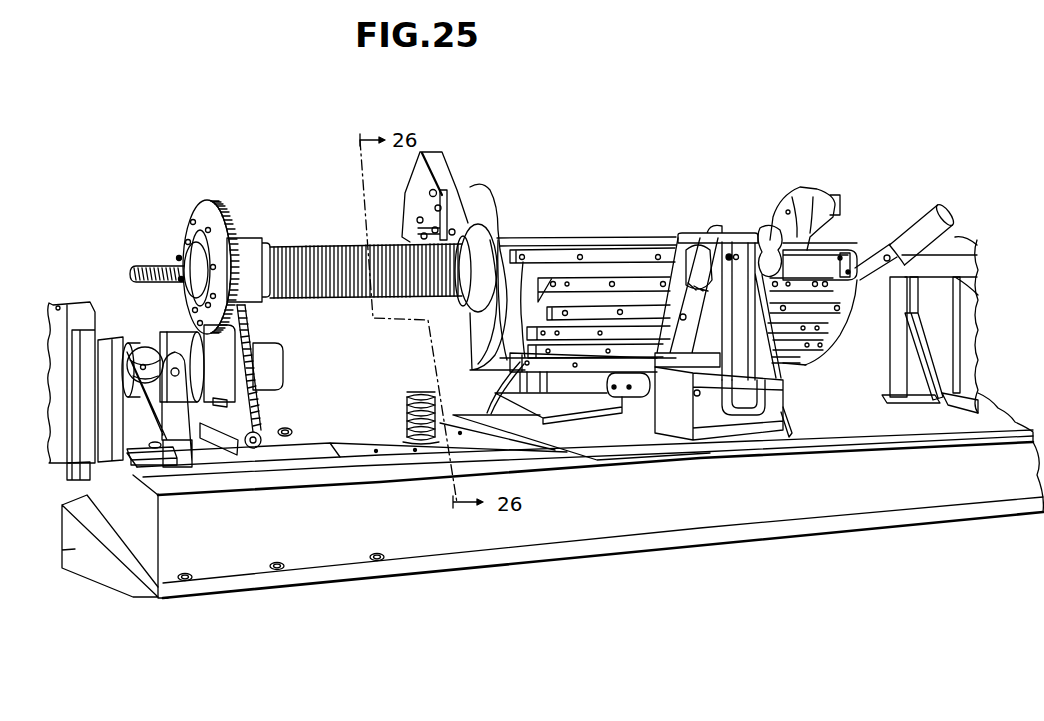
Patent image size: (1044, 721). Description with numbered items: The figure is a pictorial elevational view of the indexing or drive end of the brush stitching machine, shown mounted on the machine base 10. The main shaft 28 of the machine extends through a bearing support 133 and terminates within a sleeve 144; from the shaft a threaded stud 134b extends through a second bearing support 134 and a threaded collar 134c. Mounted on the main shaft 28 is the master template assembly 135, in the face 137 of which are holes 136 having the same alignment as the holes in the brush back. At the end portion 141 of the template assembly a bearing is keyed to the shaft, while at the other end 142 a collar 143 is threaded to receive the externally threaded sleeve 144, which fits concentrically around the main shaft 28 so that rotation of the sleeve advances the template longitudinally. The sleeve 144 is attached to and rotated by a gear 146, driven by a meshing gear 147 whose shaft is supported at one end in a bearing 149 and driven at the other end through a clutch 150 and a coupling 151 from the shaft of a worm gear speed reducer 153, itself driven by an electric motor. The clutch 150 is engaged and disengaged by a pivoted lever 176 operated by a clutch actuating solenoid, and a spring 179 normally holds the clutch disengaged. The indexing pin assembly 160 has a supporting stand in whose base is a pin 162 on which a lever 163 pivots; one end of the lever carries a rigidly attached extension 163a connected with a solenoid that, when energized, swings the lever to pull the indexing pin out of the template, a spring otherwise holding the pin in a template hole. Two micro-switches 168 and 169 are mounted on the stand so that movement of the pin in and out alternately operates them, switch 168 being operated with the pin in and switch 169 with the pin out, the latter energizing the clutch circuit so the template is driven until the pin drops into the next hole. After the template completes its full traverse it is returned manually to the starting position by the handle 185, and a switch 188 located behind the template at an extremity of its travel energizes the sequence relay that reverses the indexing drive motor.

The bed / base 10 is at (998, 403).
The main shaft 28 is at (970, 265).
The bearing support 133 is at (978, 293).
The bearing support 134 is at (233, 240).
The threaded stud 134b is at (140, 268).
The threaded collar 134c is at (183, 253).
The master template assembly 135 is at (585, 223).
The holes 136 is at (840, 330).
The face 137 is at (615, 240).
The end portion 141 is at (787, 190).
The other end 142 is at (470, 200).
The collar 143 is at (485, 235).
The sleeve 144 is at (333, 247).
The gear 146 is at (207, 202).
The meshing gear 147 is at (250, 320).
The bearing 149 is at (283, 363).
The clutch 150 is at (168, 340).
The coupling 151 is at (117, 340).
The worm gear speed reducer 153 is at (60, 305).
The indexing pin assembly 160 is at (647, 424).
The pin 162 is at (689, 395).
The lever 163 is at (757, 390).
The extension 163a is at (517, 382).
The micro-switch 168 is at (693, 260).
The micro-switch 169 is at (767, 230).
The lever 176 is at (188, 458).
The spring 179 is at (405, 405).
The handle 185 is at (948, 213).
The switch 188 is at (913, 287).